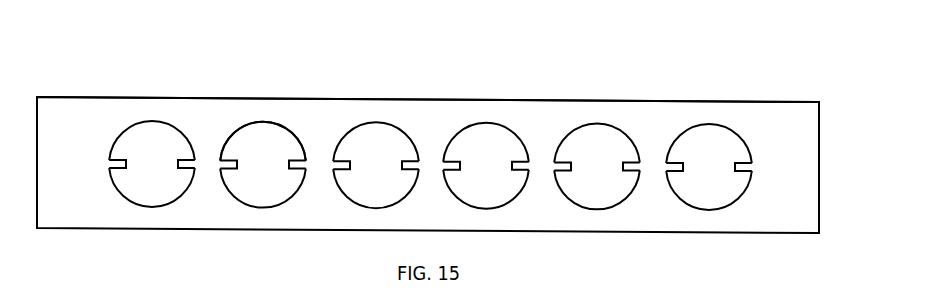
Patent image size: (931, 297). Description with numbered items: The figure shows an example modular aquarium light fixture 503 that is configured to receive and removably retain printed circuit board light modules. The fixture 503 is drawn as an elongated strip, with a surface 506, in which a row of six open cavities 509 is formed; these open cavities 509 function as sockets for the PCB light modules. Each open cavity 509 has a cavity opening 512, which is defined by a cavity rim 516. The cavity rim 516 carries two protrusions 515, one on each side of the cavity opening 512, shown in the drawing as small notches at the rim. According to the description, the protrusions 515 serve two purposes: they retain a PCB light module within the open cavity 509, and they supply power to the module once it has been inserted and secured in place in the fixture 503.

The modular aquarium light fixture 503 is at (440, 44).
The strip surface 506 is at (553, 111).
The open cavity 509 is at (310, 90).
The cavity opening 512 is at (278, 131).
The protrusion 515 is at (222, 178).
The cavity rim 516 is at (250, 215).